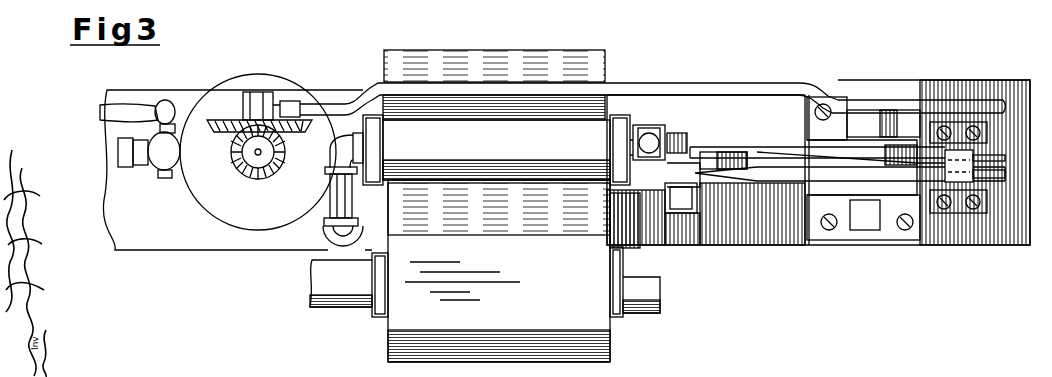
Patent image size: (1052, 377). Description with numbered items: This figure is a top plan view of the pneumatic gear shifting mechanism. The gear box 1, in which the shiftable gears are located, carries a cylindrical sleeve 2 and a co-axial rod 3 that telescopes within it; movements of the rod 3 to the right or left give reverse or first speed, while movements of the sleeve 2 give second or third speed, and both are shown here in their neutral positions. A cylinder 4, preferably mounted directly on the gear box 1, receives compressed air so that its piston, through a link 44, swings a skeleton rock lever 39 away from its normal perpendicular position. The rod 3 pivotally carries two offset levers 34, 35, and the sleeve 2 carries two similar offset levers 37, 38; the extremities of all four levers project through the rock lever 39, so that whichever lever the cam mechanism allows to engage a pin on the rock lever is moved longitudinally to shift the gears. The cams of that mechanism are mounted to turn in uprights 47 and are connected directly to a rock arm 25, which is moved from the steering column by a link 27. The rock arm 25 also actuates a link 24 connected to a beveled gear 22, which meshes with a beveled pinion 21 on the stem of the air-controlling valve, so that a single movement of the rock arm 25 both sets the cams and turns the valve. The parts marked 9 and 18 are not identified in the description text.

The gear box 1 is at (497, 271).
The cylindrical sleeve 2 is at (653, 190).
The co-axial rod 3 is at (698, 185).
The cylinder 4 is at (498, 140).
The disc 9 is at (258, 152).
The valve 18 is at (157, 163).
The beveled pinion 21 is at (240, 165).
The beveled gear 22 is at (224, 126).
The link 24 is at (558, 80).
The rock arm 25 is at (893, 113).
The link 27 is at (972, 100).
The lever 34 is at (800, 178).
The lever 35 is at (738, 157).
The lever 37 is at (778, 148).
The lever 38 is at (757, 155).
The skeleton rock lever 39 is at (965, 152).
The link 44 is at (668, 148).
The uprights 47 is at (897, 108).